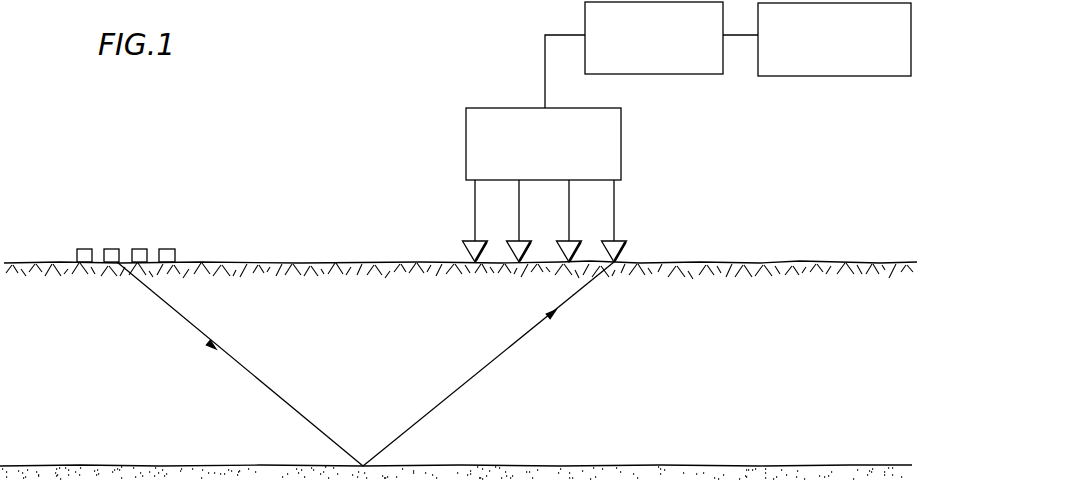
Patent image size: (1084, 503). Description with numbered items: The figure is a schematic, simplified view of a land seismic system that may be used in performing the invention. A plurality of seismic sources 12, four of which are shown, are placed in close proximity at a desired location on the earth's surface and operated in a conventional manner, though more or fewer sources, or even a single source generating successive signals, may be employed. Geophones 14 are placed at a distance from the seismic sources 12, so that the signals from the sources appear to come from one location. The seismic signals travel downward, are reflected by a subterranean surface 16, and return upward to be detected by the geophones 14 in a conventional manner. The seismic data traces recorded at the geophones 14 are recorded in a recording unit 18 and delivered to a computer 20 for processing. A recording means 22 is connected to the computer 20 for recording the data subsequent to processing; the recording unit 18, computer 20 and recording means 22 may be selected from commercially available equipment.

The seismic sources 12 is at (113, 240).
The geophones 14 is at (632, 237).
The subterranean surface 16 is at (218, 465).
The recording unit 18 is at (466, 143).
The computer 20 is at (694, 76).
The recording means 22 is at (848, 77).